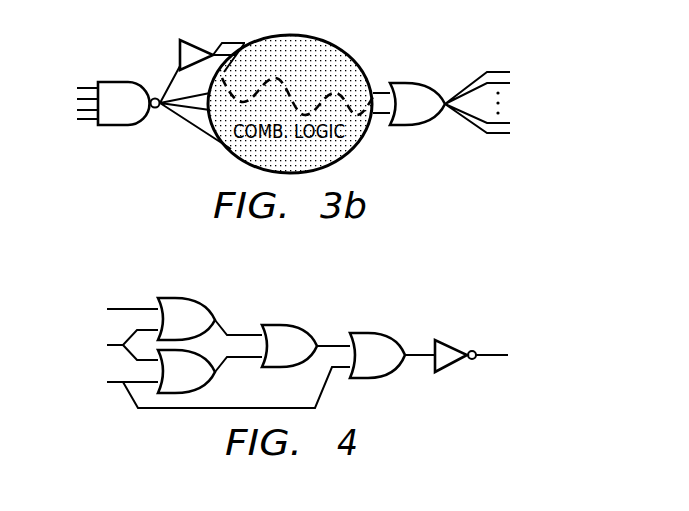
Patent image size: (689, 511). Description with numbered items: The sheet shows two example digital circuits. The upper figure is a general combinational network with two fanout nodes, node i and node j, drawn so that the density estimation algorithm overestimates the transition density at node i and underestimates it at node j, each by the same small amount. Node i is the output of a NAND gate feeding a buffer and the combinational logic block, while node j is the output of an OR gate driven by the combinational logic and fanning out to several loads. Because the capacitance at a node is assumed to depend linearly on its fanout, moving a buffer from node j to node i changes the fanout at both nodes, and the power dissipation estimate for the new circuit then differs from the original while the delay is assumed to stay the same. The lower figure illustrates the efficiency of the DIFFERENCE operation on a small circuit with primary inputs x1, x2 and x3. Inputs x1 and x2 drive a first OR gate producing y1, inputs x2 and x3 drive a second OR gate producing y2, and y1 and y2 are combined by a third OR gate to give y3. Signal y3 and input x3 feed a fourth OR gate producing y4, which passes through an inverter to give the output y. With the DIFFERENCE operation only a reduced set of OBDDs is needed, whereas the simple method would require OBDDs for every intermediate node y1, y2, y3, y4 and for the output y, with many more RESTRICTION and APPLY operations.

In FIG. 3b, the node i is at (118, 91).
In FIG. 3b, the node j is at (417, 90).
In FIG. 4, the input signal x1 is at (121, 310).
In FIG. 4, the input signal x2 is at (121, 345).
In FIG. 4, the input signal x3 is at (217, 387).
In FIG. 4, the intermediate signal y1 is at (238, 322).
In FIG. 4, the intermediate signal y2 is at (238, 369).
In FIG. 4, the intermediate signal y3 is at (333, 332).
In FIG. 4, the intermediate signal y4 is at (420, 342).
In FIG. 4, the output signal y is at (492, 342).